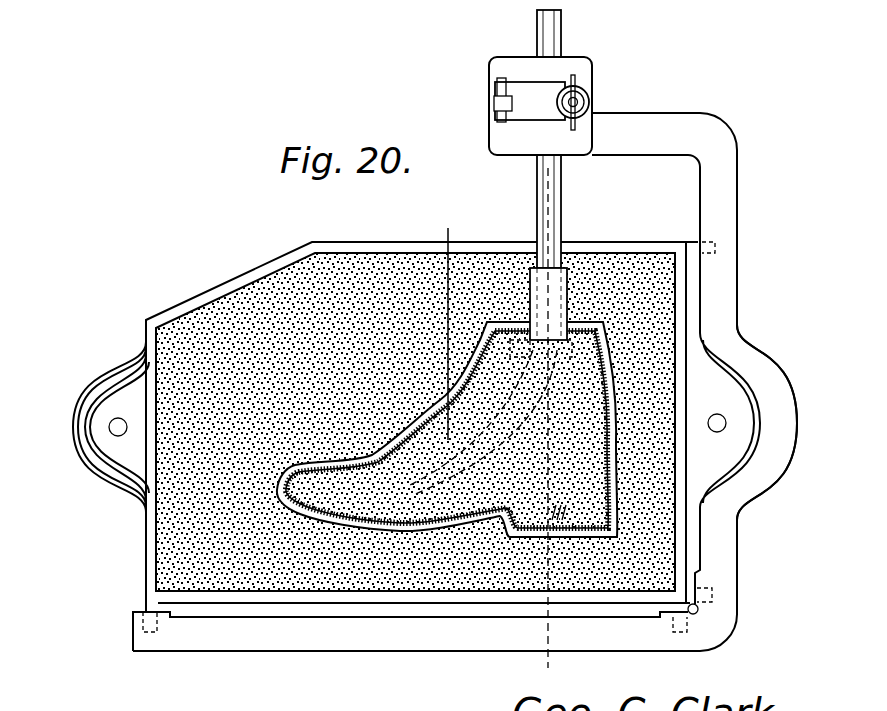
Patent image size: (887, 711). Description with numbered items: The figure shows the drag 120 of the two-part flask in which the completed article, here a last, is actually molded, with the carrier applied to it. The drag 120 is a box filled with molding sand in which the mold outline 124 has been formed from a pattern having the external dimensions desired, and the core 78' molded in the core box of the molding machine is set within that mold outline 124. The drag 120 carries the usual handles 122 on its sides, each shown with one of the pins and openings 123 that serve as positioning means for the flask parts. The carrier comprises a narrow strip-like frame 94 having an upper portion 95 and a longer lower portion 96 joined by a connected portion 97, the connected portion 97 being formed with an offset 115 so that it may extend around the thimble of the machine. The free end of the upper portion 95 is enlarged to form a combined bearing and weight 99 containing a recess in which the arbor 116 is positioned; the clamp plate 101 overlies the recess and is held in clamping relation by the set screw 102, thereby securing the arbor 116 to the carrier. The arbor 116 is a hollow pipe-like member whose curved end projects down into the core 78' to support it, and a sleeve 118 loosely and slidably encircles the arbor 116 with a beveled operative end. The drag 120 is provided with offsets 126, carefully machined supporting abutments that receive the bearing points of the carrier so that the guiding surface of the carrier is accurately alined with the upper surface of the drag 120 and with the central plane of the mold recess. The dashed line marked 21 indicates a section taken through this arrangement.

The section line 21 is at (570, 664).
The core 78' is at (453, 323).
The frame 94 is at (727, 612).
The upper portion 95 is at (659, 120).
The lower portion 96 is at (416, 641).
The connected portion 97 is at (737, 216).
The combined bearing and weight 99 is at (497, 74).
The clamp plate 101 is at (530, 110).
The set screw 102 is at (590, 98).
The offset 115 is at (792, 458).
The arbor 116 is at (538, 197).
The sleeve 118 is at (550, 283).
The drag 120 is at (378, 242).
The handles 122 is at (80, 413).
The pins and openings 123 is at (110, 430).
The mold outline 124 is at (607, 350).
The offsets 126 is at (148, 632).